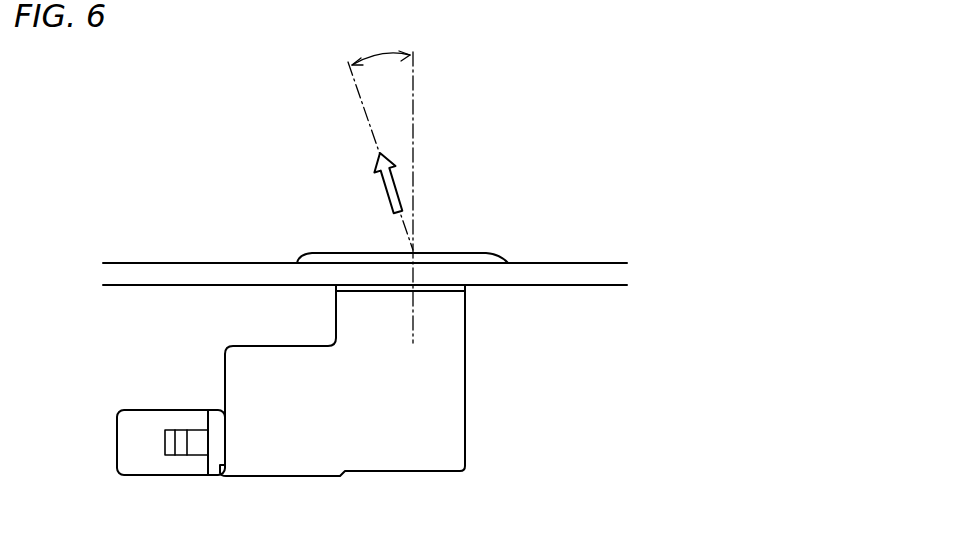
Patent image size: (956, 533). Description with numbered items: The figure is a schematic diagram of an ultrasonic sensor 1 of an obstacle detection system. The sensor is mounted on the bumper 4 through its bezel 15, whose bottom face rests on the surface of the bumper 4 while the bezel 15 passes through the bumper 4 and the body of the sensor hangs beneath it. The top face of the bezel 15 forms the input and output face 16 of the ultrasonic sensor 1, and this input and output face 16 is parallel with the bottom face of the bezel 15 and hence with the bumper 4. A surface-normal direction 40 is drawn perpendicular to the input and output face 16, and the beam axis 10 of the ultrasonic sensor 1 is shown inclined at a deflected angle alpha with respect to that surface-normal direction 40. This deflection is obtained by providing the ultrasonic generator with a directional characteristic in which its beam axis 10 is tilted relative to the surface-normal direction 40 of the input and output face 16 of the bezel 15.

The ultrasonic sensor 1 is at (468, 443).
The bumper 4 is at (177, 273).
The beam axis 10 is at (362, 103).
The bezel 15 is at (492, 253).
The input and output face 16 is at (452, 250).
The surface-normal direction 40 is at (415, 85).